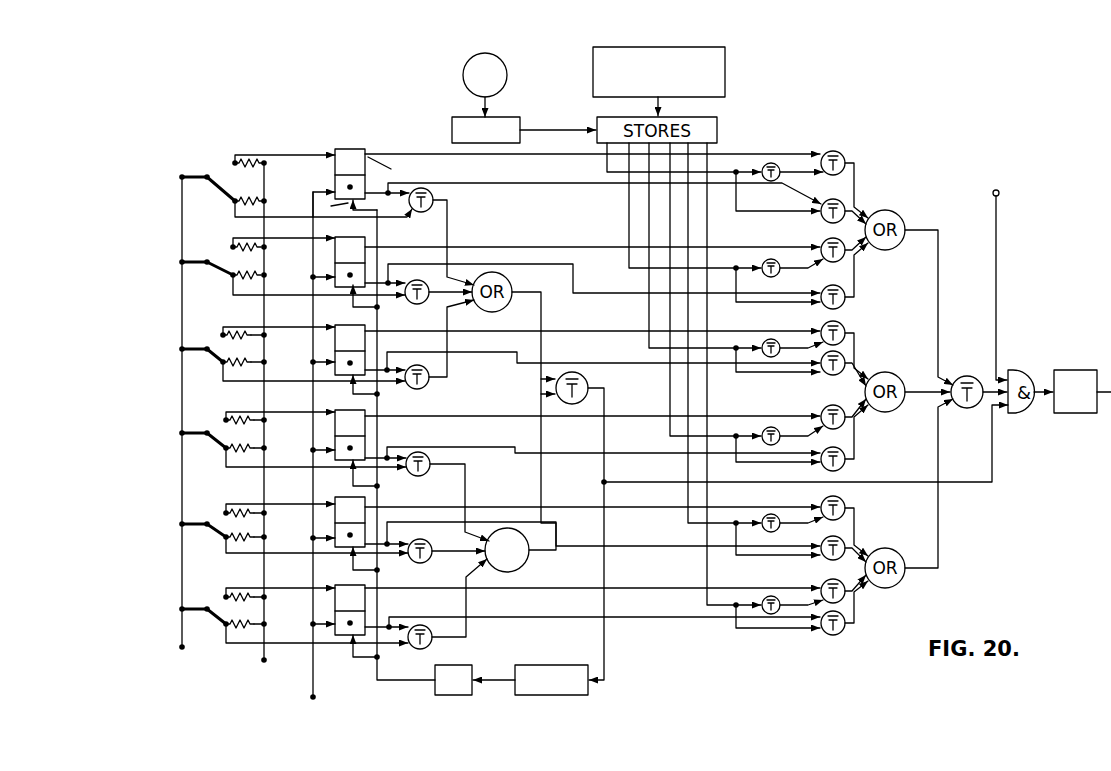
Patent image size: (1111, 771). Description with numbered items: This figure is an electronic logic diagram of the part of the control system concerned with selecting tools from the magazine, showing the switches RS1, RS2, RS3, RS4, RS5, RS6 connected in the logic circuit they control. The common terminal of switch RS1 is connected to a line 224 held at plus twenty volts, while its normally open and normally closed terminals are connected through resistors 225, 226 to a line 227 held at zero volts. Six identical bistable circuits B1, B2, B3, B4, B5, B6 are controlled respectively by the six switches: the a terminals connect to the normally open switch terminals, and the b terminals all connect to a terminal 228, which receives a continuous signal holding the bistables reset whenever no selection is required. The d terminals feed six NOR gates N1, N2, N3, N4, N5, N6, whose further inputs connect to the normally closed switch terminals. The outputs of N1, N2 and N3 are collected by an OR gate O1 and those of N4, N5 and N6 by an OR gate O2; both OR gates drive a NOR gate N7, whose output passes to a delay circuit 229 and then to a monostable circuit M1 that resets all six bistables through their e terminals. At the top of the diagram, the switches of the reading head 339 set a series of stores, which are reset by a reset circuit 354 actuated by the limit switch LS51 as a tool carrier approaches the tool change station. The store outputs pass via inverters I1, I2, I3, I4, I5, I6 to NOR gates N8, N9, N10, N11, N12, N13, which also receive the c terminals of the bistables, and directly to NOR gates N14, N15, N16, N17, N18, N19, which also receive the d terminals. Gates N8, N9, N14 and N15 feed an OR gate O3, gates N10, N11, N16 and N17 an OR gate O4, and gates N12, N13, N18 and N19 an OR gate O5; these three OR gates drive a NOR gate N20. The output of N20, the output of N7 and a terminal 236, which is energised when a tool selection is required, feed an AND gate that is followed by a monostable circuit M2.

The line held at +20 v 224 is at (180, 637).
The resistor 225 is at (250, 167).
The resistor 226 is at (250, 199).
The line held at 0 v 227 is at (262, 648).
The terminal 228 is at (313, 673).
The delay circuit 229 is at (550, 665).
The terminal 236 is at (996, 189).
The reading head 339 is at (725, 72).
The reset circuit 354 is at (502, 117).
The limit switch LS51 is at (485, 75).
The monostable circuit M1 is at (453, 680).
The monostable circuit M2 is at (1075, 391).
The bistable circuit B1 is at (357, 160).
The bistable circuit B2 is at (357, 250).
The bistable circuit B3 is at (357, 338).
The bistable circuit B4 is at (357, 423).
The bistable circuit B5 is at (357, 510).
The bistable circuit B6 is at (357, 598).
The NOR gate N1 is at (428, 192).
The NOR gate N2 is at (423, 302).
The NOR gate N3 is at (426, 384).
The NOR gate N4 is at (427, 473).
The NOR gate N5 is at (428, 560).
The NOR gate N6 is at (430, 643).
The NOR gate N7 is at (572, 404).
The NOR gate N8 is at (844, 158).
The NOR gate N9 is at (822, 246).
The NOR gate N10 is at (845, 330).
The NOR gate N11 is at (823, 411).
The NOR gate N12 is at (845, 506).
The NOR gate N13 is at (822, 586).
The NOR gate N14 is at (846, 212).
The NOR gate N15 is at (845, 295).
The NOR gate N16 is at (845, 364).
The NOR gate N17 is at (845, 460).
The NOR gate N18 is at (845, 550).
The NOR gate N19 is at (845, 629).
The NOR gate N20 is at (968, 408).
The OR gate O1 is at (510, 282).
The OR gate O2 is at (523, 566).
The OR gate O3 is at (900, 220).
The OR gate O4 is at (900, 385).
The OR gate O5 is at (900, 581).
The inverter I1 is at (763, 154).
The inverter I2 is at (762, 247).
The inverter I3 is at (763, 331).
The inverter I4 is at (768, 416).
The inverter I5 is at (768, 507).
The inverter I6 is at (762, 588).
The switch RS1 is at (245, 143).
The switch RS2 is at (232, 276).
The switch RS3 is at (222, 334).
The switch RS4 is at (225, 419).
The switch RS5 is at (225, 512).
The switch RS6 is at (210, 675).